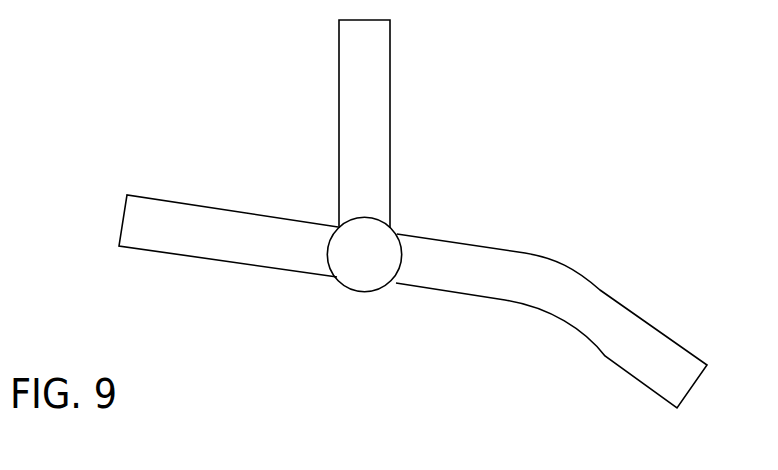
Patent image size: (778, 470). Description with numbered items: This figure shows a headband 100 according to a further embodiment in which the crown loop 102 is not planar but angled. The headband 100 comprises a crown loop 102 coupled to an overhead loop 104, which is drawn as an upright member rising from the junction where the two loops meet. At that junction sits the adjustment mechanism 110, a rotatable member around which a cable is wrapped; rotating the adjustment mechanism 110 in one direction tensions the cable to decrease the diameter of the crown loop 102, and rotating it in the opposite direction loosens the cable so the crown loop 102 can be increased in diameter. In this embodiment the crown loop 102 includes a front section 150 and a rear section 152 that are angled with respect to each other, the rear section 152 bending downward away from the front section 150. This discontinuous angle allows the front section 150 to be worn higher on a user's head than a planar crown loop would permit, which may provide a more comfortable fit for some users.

The headband 100 is at (532, 178).
The crown loop 102 is at (177, 201).
The overhead loop 104 is at (353, 59).
The adjustment mechanism 110 is at (365, 278).
The front section 150 is at (172, 239).
The rear section 152 is at (647, 367).